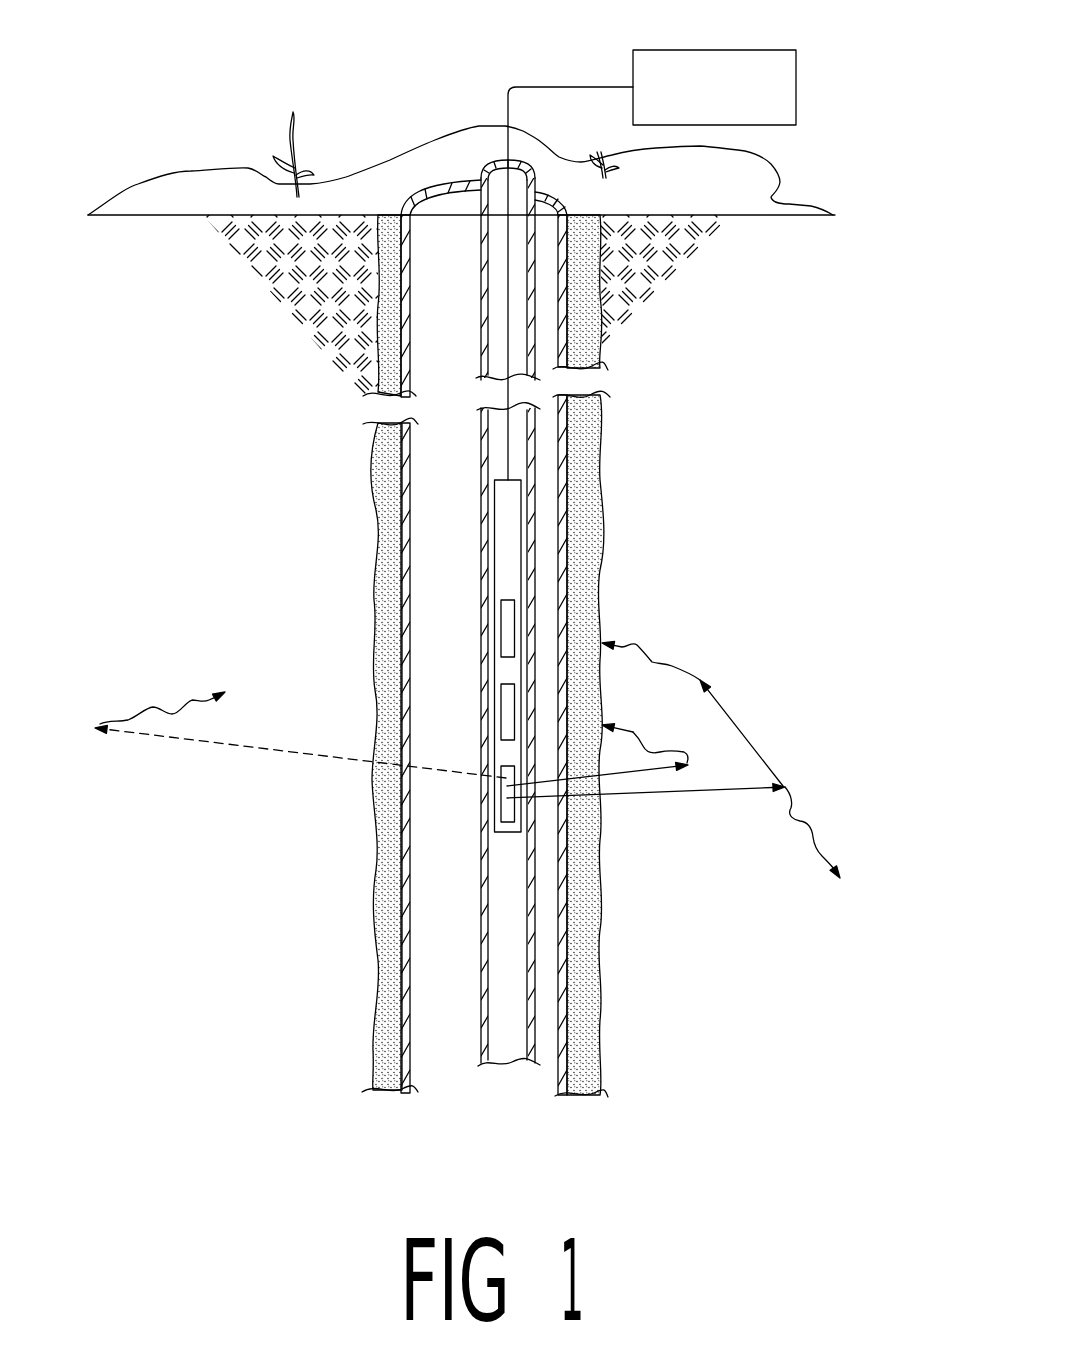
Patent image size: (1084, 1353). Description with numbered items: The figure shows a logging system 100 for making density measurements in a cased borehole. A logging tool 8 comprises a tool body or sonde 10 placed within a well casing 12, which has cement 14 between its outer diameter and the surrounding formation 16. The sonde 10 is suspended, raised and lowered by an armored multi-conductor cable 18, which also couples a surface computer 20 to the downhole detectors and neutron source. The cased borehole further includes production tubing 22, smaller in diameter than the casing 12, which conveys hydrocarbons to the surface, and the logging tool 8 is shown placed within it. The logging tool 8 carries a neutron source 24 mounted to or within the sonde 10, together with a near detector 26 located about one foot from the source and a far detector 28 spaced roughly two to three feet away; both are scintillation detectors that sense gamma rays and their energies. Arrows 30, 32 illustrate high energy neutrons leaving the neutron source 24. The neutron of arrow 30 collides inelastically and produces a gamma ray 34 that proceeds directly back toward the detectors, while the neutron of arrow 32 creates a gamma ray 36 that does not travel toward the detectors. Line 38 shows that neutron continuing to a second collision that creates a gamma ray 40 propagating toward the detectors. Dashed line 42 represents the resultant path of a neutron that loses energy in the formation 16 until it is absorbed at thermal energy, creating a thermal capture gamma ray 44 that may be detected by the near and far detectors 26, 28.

The logging system 100 is at (854, 64).
The surface computer 20 is at (753, 48).
The armored multi-conductor cable 18 is at (505, 272).
The cement 14 is at (585, 425).
The well casing 12 is at (573, 467).
The formation 16 is at (300, 470).
The logging tool 8 is at (466, 502).
The sonde 10 is at (503, 546).
The far detector 28 is at (507, 617).
The near detector 26 is at (505, 703).
The neutron source 24 is at (505, 812).
The production tubing 22 is at (482, 893).
The arrow 30 is at (623, 773).
The arrow 32 is at (697, 792).
The gamma ray 34 is at (633, 732).
The gamma ray 36 is at (812, 823).
The line 38 is at (746, 733).
The gamma ray 40 is at (652, 662).
The dashed line 42 is at (283, 752).
The gamma ray 44 is at (157, 710).